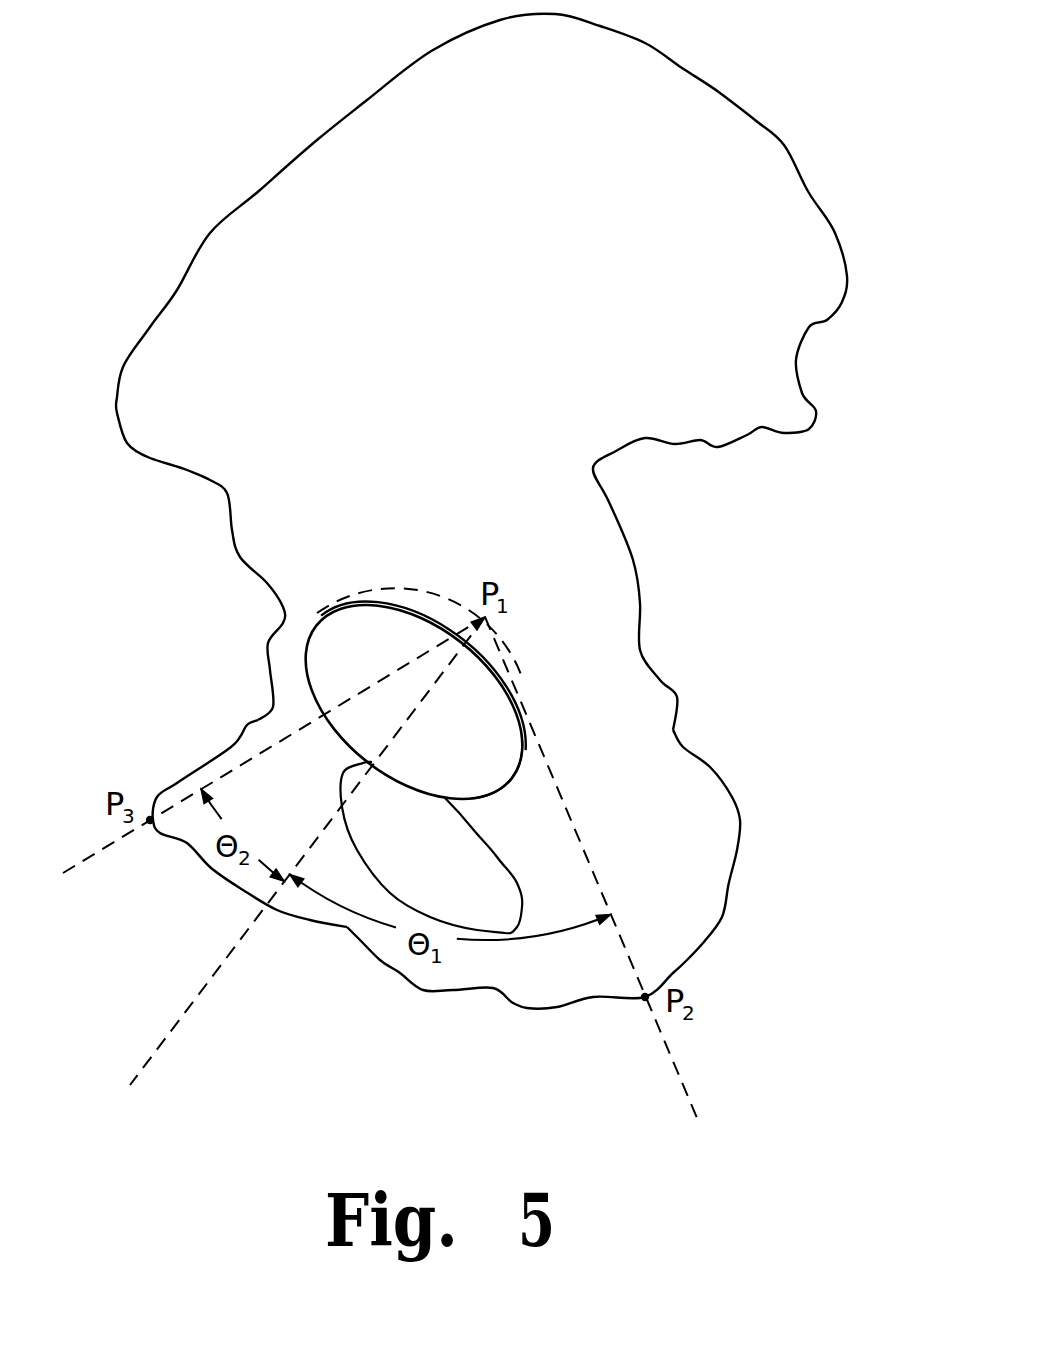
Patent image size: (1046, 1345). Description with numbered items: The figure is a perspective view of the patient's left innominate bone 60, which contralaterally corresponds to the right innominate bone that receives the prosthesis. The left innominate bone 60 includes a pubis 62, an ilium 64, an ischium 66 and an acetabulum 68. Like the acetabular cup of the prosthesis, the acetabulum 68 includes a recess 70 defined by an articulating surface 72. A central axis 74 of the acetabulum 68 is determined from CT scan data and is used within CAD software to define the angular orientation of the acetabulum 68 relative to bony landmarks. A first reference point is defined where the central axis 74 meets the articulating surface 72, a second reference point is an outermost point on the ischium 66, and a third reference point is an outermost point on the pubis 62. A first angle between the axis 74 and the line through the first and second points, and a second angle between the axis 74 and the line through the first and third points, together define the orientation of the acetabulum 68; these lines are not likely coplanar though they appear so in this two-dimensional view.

The left innominate bone 60 is at (471, 511).
The pubis 62 is at (294, 812).
The ilium 64 is at (556, 143).
The ischium 66 is at (700, 842).
The acetabulum 68 is at (322, 600).
The recess 70 is at (470, 745).
The articulating surface 72 is at (421, 588).
The central axis 74 is at (213, 980).